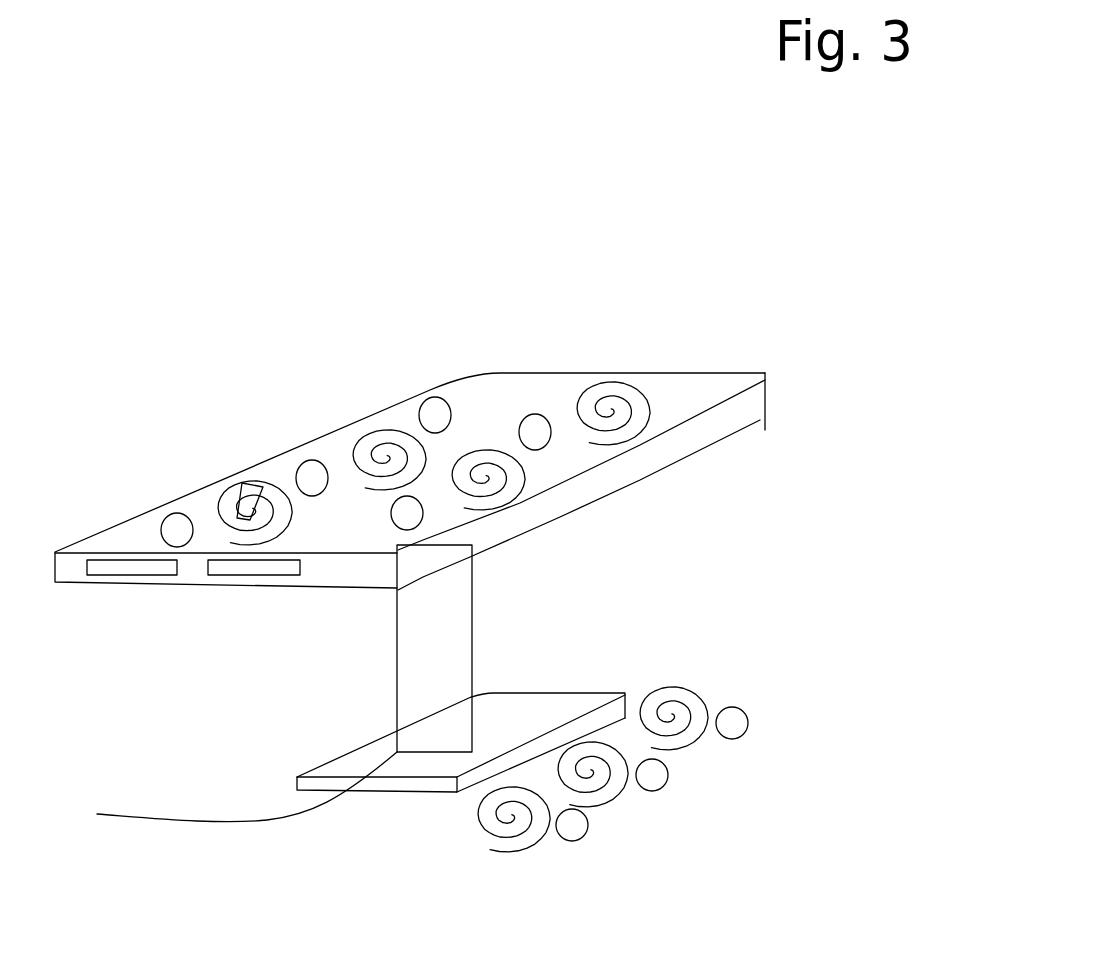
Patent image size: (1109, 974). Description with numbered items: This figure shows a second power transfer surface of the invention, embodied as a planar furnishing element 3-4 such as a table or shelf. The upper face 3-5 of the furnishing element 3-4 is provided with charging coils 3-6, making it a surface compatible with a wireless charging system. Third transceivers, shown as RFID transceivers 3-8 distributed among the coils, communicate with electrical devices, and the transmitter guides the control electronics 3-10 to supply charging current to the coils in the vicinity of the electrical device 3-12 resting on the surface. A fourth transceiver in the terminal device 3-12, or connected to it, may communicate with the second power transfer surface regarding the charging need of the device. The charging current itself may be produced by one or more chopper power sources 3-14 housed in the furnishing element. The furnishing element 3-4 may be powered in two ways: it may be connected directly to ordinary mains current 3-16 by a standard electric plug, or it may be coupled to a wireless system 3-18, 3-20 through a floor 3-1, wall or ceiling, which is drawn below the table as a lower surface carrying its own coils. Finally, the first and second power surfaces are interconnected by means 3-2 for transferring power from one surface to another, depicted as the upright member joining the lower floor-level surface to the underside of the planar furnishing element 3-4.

The floor 3-1 is at (782, 658).
The means for transferring power 3-2 is at (434, 648).
The planar furnishing element 3-4 is at (520, 372).
The upper face 3-5 is at (695, 378).
The charging coils 3-6 is at (537, 483).
The RFID transceivers 3-8 is at (413, 418).
The control electronics 3-10 is at (123, 577).
The electrical device 3-12 is at (240, 498).
The chopper power sources 3-14 is at (268, 577).
The mains current 3-16 is at (185, 830).
The wireless system 3-18 is at (540, 850).
The wireless system 3-20 is at (743, 727).